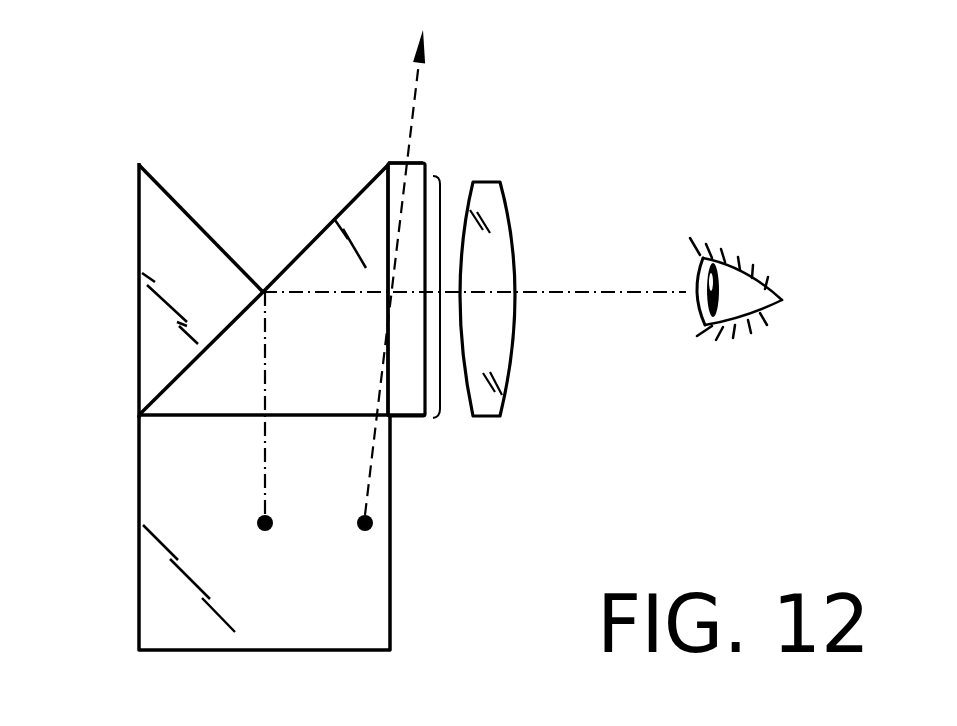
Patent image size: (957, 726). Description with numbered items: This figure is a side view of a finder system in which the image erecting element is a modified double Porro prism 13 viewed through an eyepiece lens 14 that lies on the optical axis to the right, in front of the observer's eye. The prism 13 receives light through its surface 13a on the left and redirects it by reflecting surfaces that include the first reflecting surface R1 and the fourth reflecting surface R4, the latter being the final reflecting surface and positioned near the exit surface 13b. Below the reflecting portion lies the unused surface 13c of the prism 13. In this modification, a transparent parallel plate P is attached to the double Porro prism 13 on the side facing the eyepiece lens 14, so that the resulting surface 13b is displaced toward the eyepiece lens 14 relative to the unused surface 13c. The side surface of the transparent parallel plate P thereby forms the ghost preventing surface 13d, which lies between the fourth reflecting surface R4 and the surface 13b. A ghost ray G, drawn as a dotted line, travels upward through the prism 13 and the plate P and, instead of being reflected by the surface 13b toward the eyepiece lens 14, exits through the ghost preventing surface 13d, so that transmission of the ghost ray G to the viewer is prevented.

The double Porro prism 13 is at (257, 156).
The surface 13a is at (138, 223).
The surface 13b is at (441, 197).
The unused surface 13c is at (412, 423).
The ghost preventing surface 13d is at (400, 163).
The eyepiece lens 14 is at (523, 358).
The first reflecting surface R1 is at (172, 196).
The fourth reflecting surface R4 is at (188, 364).
The ghost ray G is at (417, 90).
The transparent parallel plate P is at (417, 403).